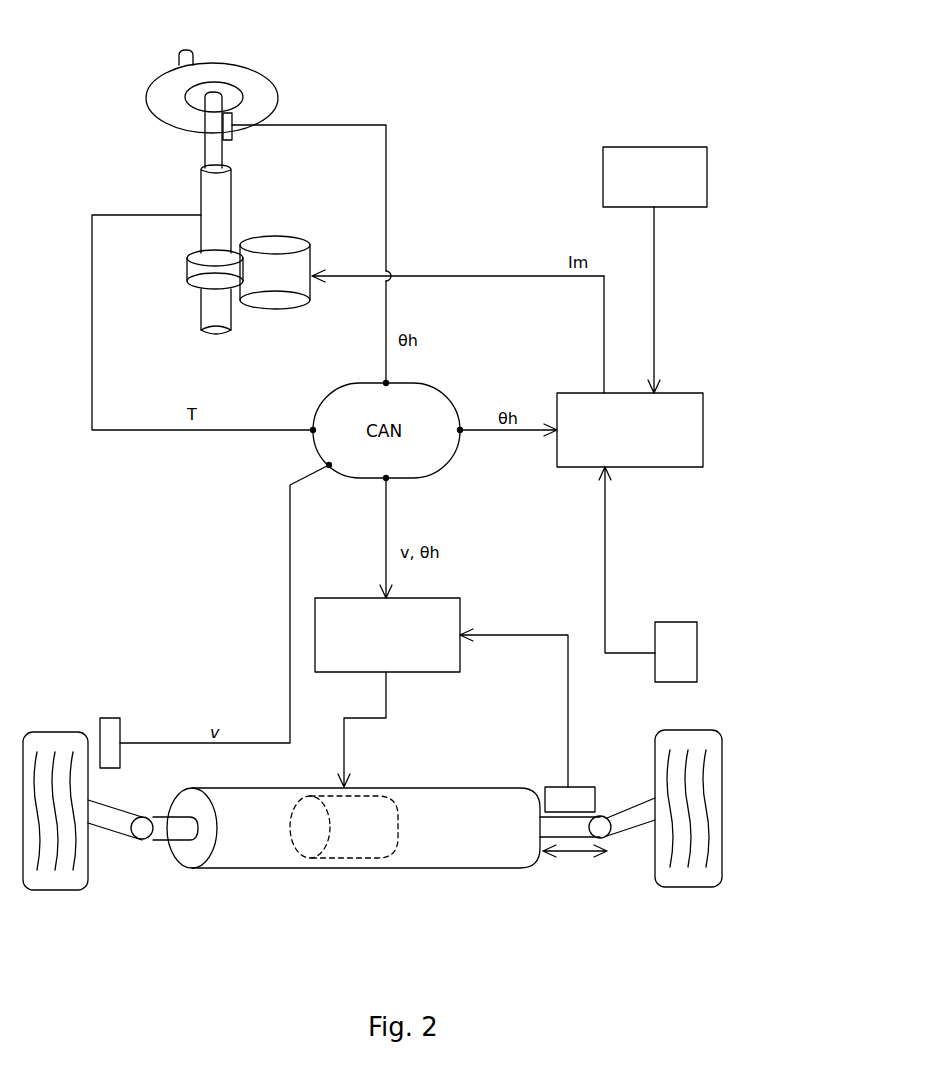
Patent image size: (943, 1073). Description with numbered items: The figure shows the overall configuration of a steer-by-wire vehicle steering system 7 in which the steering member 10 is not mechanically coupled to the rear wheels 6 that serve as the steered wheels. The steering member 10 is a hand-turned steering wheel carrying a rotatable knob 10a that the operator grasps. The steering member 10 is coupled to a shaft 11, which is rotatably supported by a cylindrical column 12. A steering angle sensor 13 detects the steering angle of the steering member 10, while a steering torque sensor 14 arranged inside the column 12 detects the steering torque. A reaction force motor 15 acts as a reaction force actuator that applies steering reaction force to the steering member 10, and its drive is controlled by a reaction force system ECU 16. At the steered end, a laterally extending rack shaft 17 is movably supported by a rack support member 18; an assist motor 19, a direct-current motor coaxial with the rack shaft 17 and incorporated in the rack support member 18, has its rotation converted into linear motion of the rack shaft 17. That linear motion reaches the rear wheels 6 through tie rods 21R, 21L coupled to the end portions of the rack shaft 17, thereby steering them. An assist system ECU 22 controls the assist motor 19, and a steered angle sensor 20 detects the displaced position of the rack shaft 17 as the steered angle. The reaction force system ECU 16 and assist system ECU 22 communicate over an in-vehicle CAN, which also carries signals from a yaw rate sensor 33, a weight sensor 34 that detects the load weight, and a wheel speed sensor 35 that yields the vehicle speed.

The vehicle steering system 7 is at (585, 60).
The steering member 10 is at (243, 63).
The knob 10a is at (186, 49).
The shaft 11 is at (223, 157).
The column 12 is at (260, 209).
The steering torque sensor 14 is at (232, 198).
The steering angle sensor 13 is at (240, 122).
The reaction force motor 15 is at (275, 312).
The reaction force system ECU 16 is at (680, 393).
The rack shaft 17 is at (195, 290).
The rack support member 18 is at (426, 869).
The assist motor 19 is at (345, 862).
The steered angle sensor 20 is at (580, 787).
The tie rod 21L is at (118, 836).
The tie rod 21R is at (626, 838).
The assist system ECU 22 is at (461, 608).
The yaw rate sensor 33 is at (674, 622).
The weight sensor 34 is at (660, 147).
The wheel speed sensor 35 is at (110, 718).
The rear wheels 6 is at (57, 891).